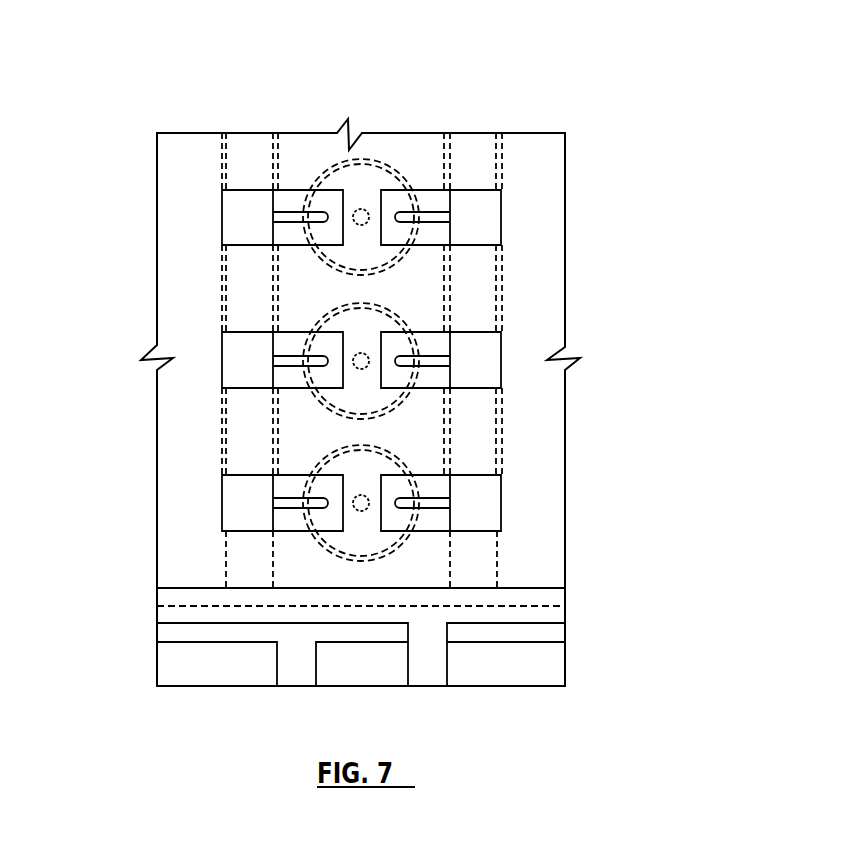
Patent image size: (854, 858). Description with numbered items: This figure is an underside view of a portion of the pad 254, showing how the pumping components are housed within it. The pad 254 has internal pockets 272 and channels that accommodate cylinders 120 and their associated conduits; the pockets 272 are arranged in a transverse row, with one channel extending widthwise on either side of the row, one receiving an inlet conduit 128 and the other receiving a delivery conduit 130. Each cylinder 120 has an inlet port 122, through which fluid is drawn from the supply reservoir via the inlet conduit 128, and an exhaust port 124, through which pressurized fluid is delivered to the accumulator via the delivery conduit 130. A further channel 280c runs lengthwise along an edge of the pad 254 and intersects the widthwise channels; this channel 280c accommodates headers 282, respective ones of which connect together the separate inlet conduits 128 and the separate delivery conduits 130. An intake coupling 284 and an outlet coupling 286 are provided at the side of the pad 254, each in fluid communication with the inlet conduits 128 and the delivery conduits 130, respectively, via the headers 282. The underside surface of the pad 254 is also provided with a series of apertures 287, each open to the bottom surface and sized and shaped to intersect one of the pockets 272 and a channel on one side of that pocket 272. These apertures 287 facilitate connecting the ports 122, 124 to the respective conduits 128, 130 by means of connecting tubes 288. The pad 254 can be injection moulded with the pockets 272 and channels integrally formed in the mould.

The cylinder 120 is at (412, 212).
The inlet port 122 is at (320, 213).
The exhaust port 124 is at (395, 213).
The inlet conduit 128 is at (250, 240).
The delivery conduit 130 is at (482, 207).
The pad 254 is at (657, 186).
The pocket 272 is at (373, 163).
The channel 280c is at (532, 592).
The header 282 is at (540, 633).
The intake coupling 284 is at (298, 677).
The outlet coupling 286 is at (430, 683).
The aperture 287 is at (489, 182).
The connecting tube 288 is at (284, 215).